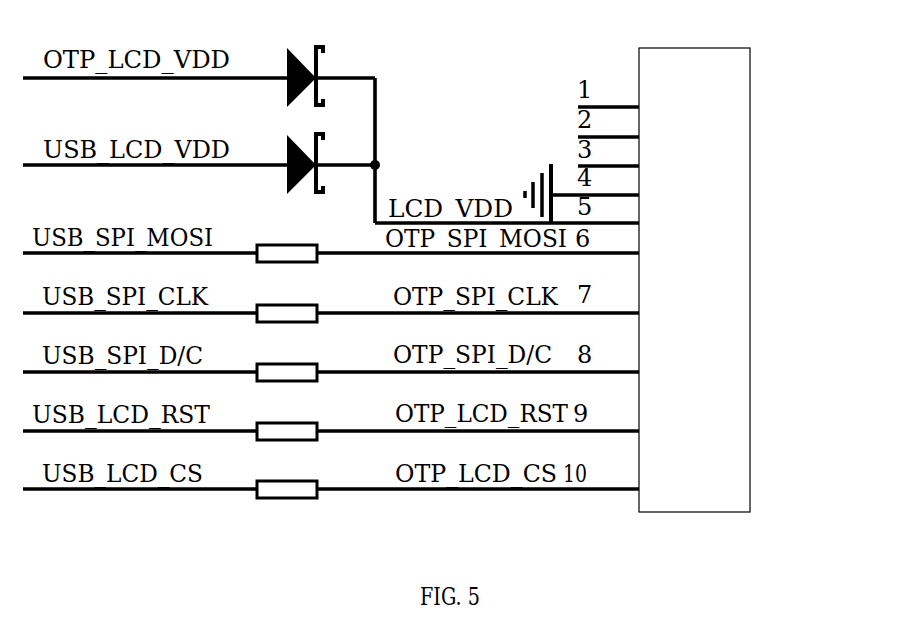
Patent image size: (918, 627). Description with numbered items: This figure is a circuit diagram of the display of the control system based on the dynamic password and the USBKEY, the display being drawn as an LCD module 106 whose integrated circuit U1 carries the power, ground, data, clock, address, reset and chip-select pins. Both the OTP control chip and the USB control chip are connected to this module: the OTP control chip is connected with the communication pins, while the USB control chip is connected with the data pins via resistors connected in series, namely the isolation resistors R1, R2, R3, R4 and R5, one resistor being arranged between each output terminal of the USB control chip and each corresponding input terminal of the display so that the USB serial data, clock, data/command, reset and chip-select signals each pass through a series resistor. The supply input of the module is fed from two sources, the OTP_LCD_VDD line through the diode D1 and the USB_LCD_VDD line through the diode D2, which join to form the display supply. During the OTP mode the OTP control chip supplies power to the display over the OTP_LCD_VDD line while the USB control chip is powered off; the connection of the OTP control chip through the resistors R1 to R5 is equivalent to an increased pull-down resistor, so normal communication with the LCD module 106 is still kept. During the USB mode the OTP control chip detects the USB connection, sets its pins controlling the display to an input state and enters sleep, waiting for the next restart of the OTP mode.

The LCD module 106 is at (735, 282).
The LCD module integrated circuit U1 is at (694, 265).
The Schottky diode 1N5819 (OTP LCD VDD) D1 is at (292, 90).
The Schottky diode 1N5819 (USB LCD VDD) D2 is at (292, 177).
The resistor (SPI MOSI) R1 is at (267, 241).
The resistor (SPI CLK) R2 is at (267, 301).
The resistor (SPI D/C) R3 is at (267, 360).
The resistor (LCD RST) R4 is at (267, 419).
The resistor (LCD CS) R5 is at (267, 478).